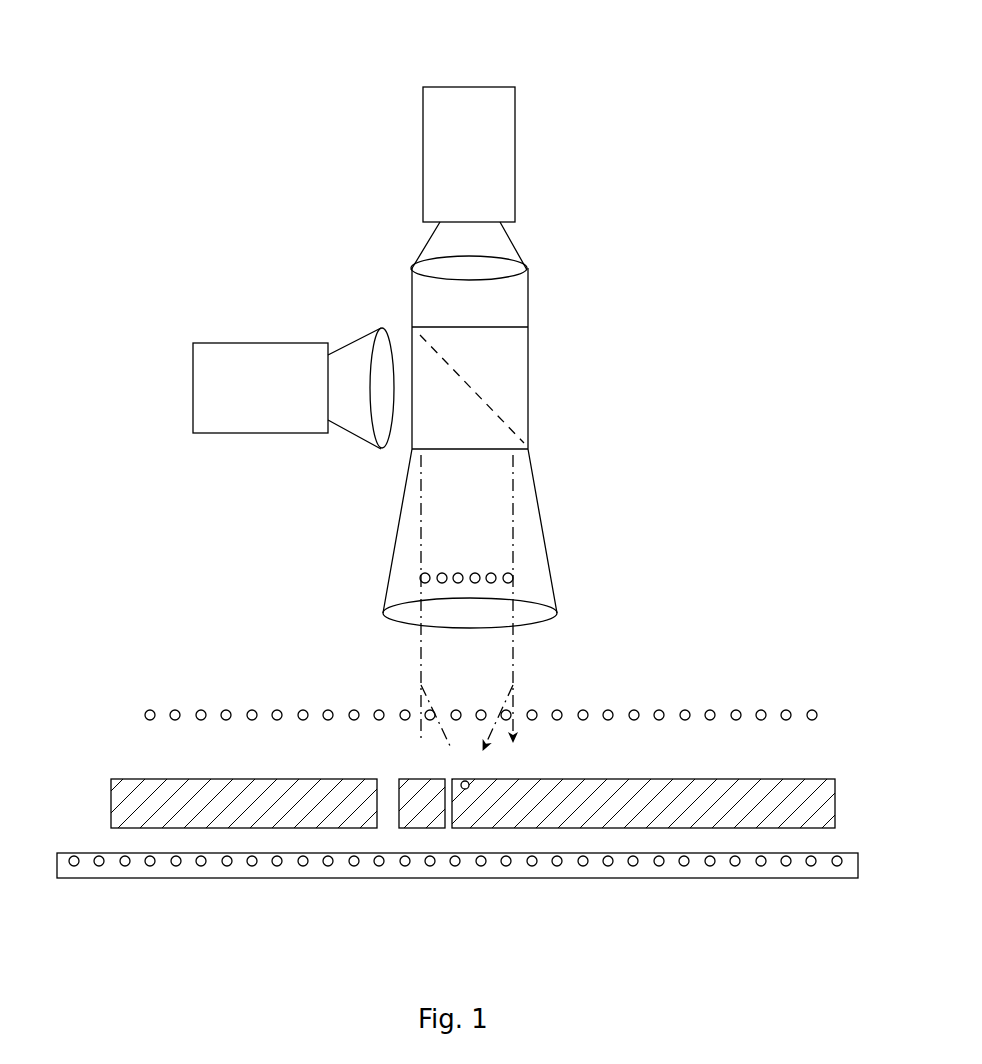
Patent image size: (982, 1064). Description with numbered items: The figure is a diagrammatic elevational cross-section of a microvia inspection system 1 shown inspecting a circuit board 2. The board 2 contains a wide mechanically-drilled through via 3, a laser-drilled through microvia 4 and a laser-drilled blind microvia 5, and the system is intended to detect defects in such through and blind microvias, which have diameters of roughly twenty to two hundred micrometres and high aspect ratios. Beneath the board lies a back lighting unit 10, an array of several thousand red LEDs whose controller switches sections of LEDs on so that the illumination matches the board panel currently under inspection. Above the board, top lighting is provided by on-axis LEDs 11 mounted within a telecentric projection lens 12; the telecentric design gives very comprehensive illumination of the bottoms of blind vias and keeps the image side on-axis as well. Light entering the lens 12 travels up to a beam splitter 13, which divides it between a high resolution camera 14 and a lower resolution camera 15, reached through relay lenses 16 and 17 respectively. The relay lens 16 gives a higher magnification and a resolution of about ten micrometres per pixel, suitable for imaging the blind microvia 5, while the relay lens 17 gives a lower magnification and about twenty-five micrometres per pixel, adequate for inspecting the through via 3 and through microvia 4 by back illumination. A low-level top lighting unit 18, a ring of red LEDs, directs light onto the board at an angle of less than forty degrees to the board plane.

The microvia inspection system 1 is at (168, 154).
The circuit board 2 is at (449, 833).
The mechanically-drilled through via 3 is at (372, 798).
The laser-drilled through microvia 4 is at (441, 800).
The laser-drilled blind microvia 5 is at (468, 788).
The back lighting unit 10 is at (180, 878).
The on-axis LEDs 11 is at (490, 578).
The telecentric projection lens 12 is at (538, 491).
The beam splitter 13 is at (480, 398).
The high resolution camera 14 is at (260, 433).
The lower resolution camera 15 is at (515, 142).
The relay lens 16 is at (374, 413).
The relay lens 17 is at (497, 258).
The low-level top lighting unit 18 is at (697, 690).